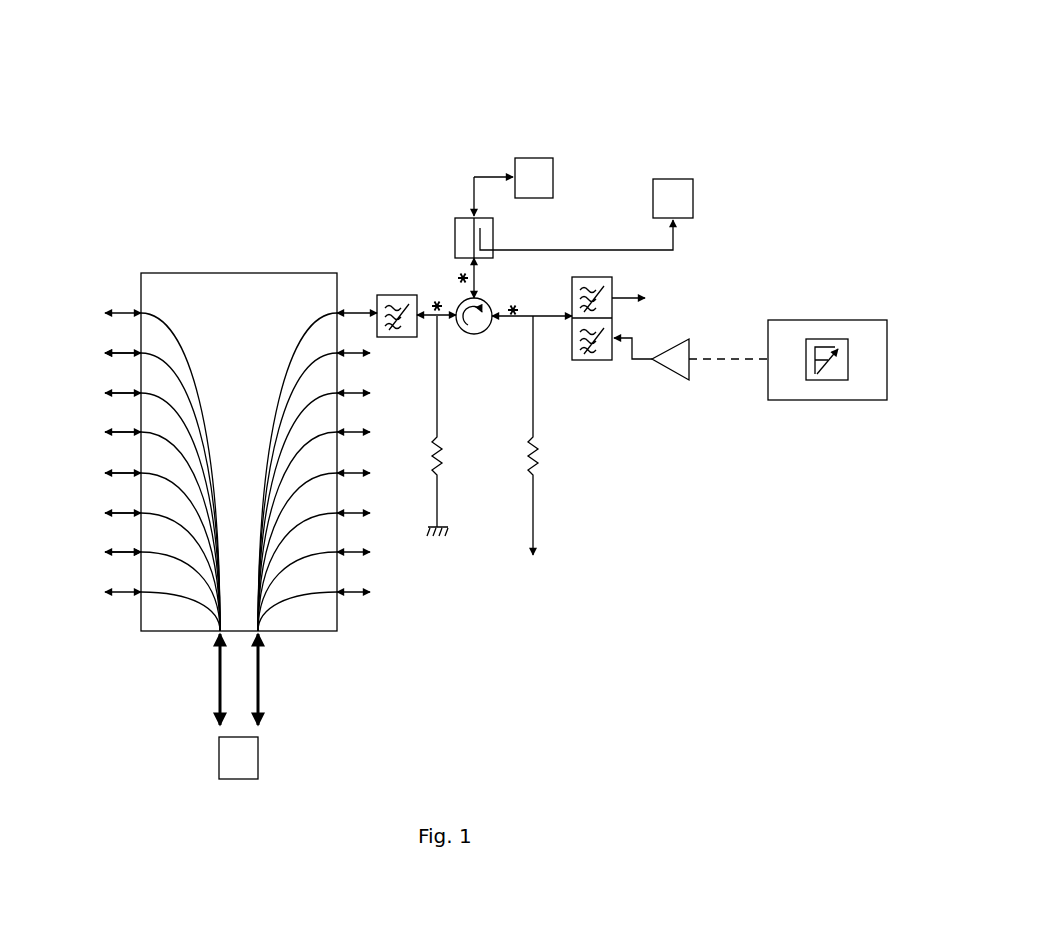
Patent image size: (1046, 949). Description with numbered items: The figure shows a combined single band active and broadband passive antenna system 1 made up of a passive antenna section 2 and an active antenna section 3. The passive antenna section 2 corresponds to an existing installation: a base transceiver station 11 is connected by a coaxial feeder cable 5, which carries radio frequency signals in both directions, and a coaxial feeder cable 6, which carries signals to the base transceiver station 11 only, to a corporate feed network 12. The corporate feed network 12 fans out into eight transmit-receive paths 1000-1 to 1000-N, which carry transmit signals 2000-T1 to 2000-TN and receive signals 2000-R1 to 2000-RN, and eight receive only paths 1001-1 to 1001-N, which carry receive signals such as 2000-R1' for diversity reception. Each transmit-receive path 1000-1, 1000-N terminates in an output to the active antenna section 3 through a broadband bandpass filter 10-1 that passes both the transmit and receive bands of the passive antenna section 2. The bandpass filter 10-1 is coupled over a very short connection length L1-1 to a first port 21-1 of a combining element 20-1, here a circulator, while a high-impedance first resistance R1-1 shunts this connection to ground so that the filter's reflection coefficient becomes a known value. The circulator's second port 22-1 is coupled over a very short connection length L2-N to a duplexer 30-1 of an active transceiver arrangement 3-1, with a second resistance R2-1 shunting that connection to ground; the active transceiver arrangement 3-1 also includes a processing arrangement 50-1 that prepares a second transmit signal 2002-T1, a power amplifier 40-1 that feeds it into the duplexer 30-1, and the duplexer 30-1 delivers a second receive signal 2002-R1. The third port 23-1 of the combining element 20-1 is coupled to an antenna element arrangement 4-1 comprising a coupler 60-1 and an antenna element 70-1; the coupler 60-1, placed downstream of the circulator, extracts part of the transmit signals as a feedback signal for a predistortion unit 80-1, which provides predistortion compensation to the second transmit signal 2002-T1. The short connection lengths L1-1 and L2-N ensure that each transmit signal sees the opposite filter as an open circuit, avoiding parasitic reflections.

The combined single band active and broadband passive antenna system 1 is at (158, 216).
The passive antenna section 2 is at (398, 707).
The active antenna section 3 is at (693, 91).
The active transceiver arrangement 3-1 is at (841, 281).
The antenna element arrangement 4-1 is at (449, 135).
The coaxial feeder cable 5 is at (258, 680).
The coaxial feeder cable 6 is at (220, 680).
The bandpass filter 10-1 is at (385, 288).
The base transceiver station 11 is at (238, 758).
The corporate feed network 12 is at (251, 436).
The combining element 20-1 is at (472, 336).
The first port 21-1 is at (435, 320).
The second port 22-1 is at (515, 306).
The third port 23-1 is at (488, 300).
The duplexer 30-1 is at (590, 362).
The power amplifier 40-1 is at (682, 378).
The processing arrangement 50-1 is at (840, 402).
The coupler 60-1 is at (455, 235).
The antenna element 70-1 is at (527, 158).
The predistortion unit 80-1 is at (693, 198).
The first resistance R1-1 is at (461, 426).
The second resistance R2-1 is at (561, 435).
The connection length L1-1 is at (437, 304).
The connection length L2-N is at (513, 316).
The transmit-receive path 1000-1 is at (306, 318).
The transmit-receive path 1000-N is at (298, 597).
The receive only path 1001-1 is at (88, 313).
The receive only path 1001-N is at (89, 612).
The transmit signal 2000-T1 is at (299, 329).
The receive signal 2000-R1 is at (299, 333).
The receive signal 2000-R1' is at (88, 325).
The transmit signal 2000-TN is at (402, 584).
The receive signal 2000-RN is at (402, 597).
The second receive signal 2002-R1 is at (671, 285).
The second transmit signal 2002-T1 is at (662, 337).